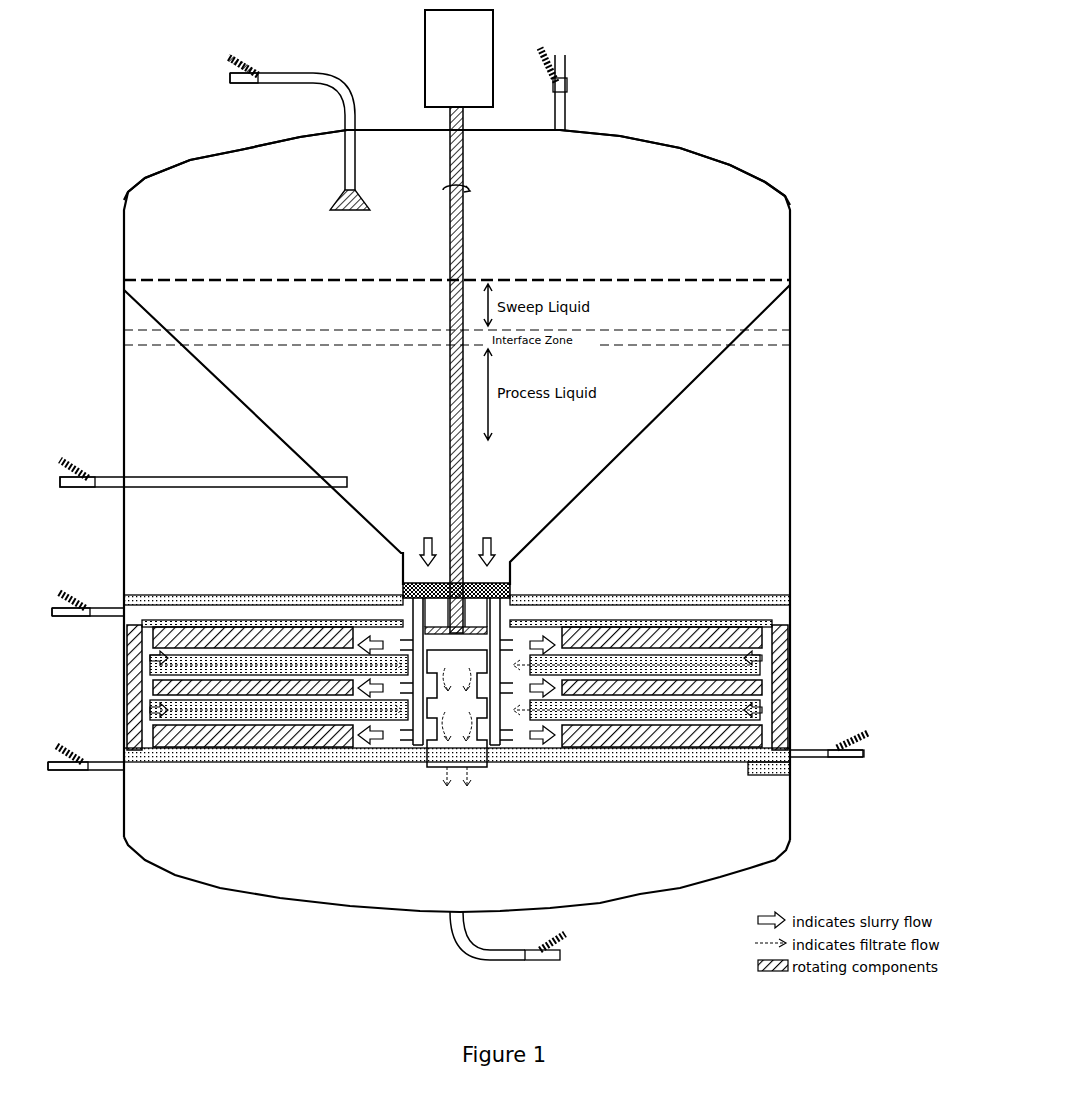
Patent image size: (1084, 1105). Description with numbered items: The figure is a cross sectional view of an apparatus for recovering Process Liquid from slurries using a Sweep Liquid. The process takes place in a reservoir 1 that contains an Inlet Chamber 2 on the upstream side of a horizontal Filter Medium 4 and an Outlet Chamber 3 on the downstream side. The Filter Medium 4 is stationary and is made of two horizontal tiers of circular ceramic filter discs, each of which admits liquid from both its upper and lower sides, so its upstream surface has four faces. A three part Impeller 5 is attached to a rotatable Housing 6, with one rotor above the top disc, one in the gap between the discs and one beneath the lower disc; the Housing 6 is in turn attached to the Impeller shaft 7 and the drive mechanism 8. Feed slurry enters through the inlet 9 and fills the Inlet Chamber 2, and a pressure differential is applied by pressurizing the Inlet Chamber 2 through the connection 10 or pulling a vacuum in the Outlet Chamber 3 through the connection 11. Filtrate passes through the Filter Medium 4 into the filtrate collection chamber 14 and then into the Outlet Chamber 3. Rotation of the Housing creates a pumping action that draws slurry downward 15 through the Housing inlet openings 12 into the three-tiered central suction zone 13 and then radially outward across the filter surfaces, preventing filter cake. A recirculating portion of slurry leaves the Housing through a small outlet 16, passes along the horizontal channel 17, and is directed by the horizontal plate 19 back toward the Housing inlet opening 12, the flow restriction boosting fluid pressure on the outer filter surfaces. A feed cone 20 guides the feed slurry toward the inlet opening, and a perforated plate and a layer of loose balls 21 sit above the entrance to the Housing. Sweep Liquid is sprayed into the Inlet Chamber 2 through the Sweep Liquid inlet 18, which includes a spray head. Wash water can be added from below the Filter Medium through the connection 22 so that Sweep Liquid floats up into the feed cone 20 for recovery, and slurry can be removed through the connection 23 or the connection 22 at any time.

The reservoir 1 is at (637, 133).
The Inlet Chamber 2 is at (748, 220).
The Outlet Chamber 3 is at (738, 848).
The Filter Medium 4 is at (105, 680).
The Impeller 5 is at (285, 748).
The Housing 6 is at (292, 650).
The Impeller shaft 7 is at (465, 211).
The drive mechanism 8 is at (459, 58).
The inlet 9 is at (112, 487).
The connection 10 is at (567, 112).
The connection 11 is at (100, 771).
The Housing inlet openings 12 is at (408, 603).
The central suction zone 13 is at (546, 604).
The filtrate collection chamber 14 is at (440, 745).
The downward flow of feed slurry 15 is at (452, 935).
The small outlet 16 is at (792, 635).
The horizontal channel 17 is at (660, 605).
The Sweep Liquid inlet 18 is at (302, 83).
The horizontal plate 19 is at (742, 604).
The feed cone 20 is at (672, 408).
The perforated plate and layer of loose balls 21 is at (498, 590).
The connection 22 is at (818, 758).
The connection 23 is at (100, 617).